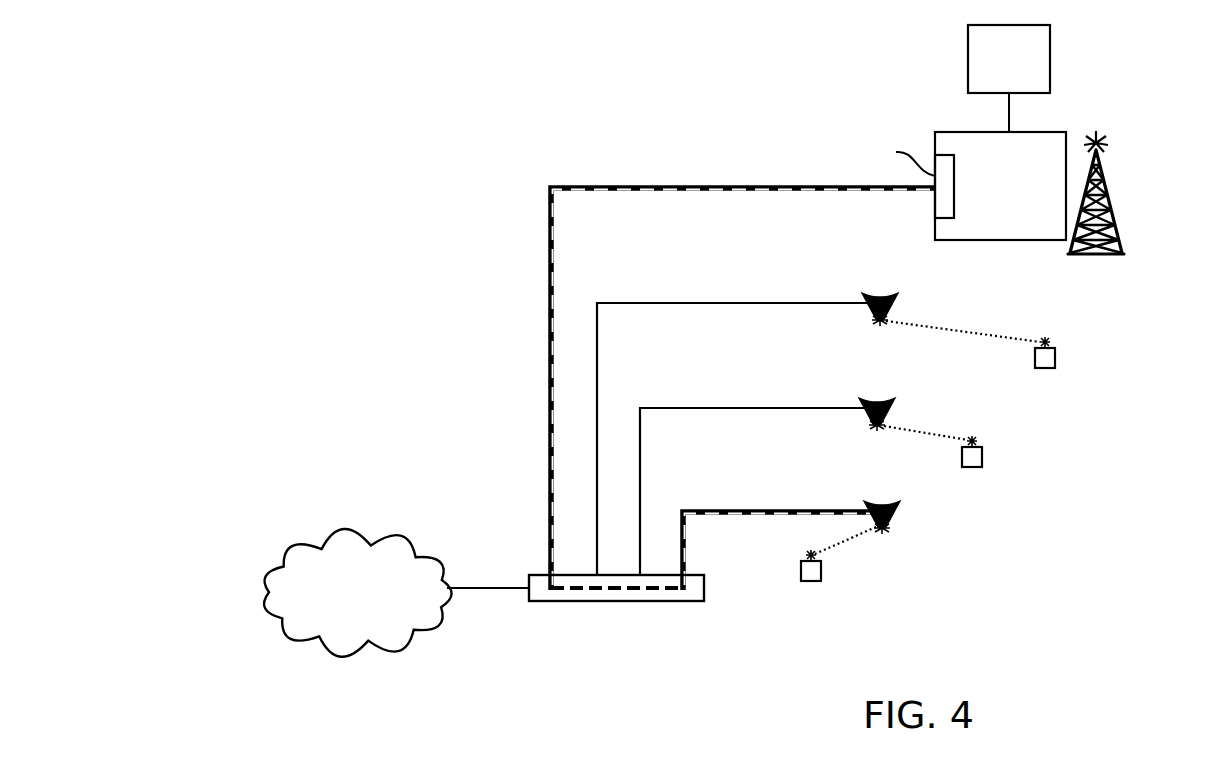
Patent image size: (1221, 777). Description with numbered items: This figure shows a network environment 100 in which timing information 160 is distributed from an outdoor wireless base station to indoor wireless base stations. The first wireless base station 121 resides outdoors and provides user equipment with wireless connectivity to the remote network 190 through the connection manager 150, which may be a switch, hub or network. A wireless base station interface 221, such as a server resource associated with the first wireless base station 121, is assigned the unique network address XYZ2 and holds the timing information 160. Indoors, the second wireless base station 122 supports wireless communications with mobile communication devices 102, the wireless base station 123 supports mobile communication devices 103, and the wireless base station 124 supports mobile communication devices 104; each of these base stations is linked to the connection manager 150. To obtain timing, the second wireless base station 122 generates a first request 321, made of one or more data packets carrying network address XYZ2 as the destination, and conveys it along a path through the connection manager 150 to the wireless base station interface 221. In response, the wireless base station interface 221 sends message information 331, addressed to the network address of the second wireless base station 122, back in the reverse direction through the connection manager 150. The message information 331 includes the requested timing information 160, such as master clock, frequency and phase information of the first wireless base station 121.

The network environment 100 is at (299, 82).
The timing information 160 is at (992, 82).
The wireless base station interface 221 is at (986, 196).
The first wireless base station 121 is at (1115, 208).
The second wireless base station 122 is at (896, 512).
The wireless base station 123 is at (866, 417).
The wireless base station 124 is at (870, 312).
The mobile communication devices 102 is at (823, 570).
The mobile communication devices 103 is at (984, 456).
The mobile communication devices 104 is at (1057, 357).
The remote network 190 is at (341, 597).
The connection manager 150 is at (620, 607).
The first request 321 is at (760, 162).
The message information 331 is at (782, 212).